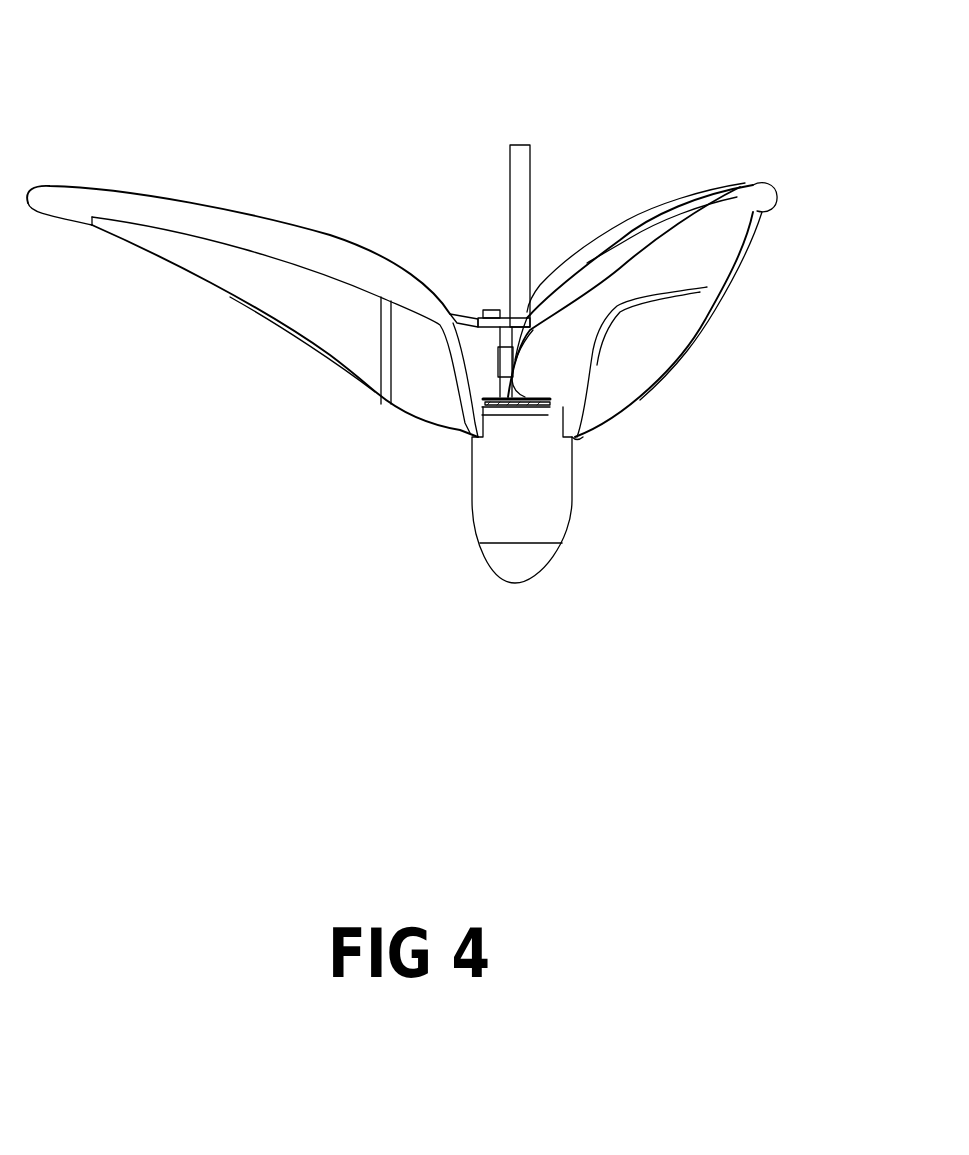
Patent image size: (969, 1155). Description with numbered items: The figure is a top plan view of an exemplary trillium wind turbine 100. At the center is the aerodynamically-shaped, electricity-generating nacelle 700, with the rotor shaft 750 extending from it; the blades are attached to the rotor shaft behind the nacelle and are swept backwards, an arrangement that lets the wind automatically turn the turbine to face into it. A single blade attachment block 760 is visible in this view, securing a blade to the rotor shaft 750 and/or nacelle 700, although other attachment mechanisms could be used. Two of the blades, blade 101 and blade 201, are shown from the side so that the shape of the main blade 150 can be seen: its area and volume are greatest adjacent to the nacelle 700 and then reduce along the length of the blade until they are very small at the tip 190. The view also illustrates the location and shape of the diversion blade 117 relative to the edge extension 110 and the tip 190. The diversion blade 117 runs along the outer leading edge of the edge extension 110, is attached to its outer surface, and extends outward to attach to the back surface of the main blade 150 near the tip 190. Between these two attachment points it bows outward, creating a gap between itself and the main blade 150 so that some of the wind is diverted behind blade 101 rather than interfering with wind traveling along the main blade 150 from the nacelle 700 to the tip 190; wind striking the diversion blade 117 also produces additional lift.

The trillium wind turbine 100 is at (163, 852).
The blade 101 is at (263, 202).
The blade 201 is at (642, 298).
The tip 190 is at (252, 236).
The edge extension 110 is at (427, 383).
The diversion blade 117 is at (300, 305).
The main blade 150 is at (552, 360).
The nacelle 700 is at (470, 497).
The rotor shaft 750 is at (503, 148).
The blade attachment block 760 is at (466, 294).